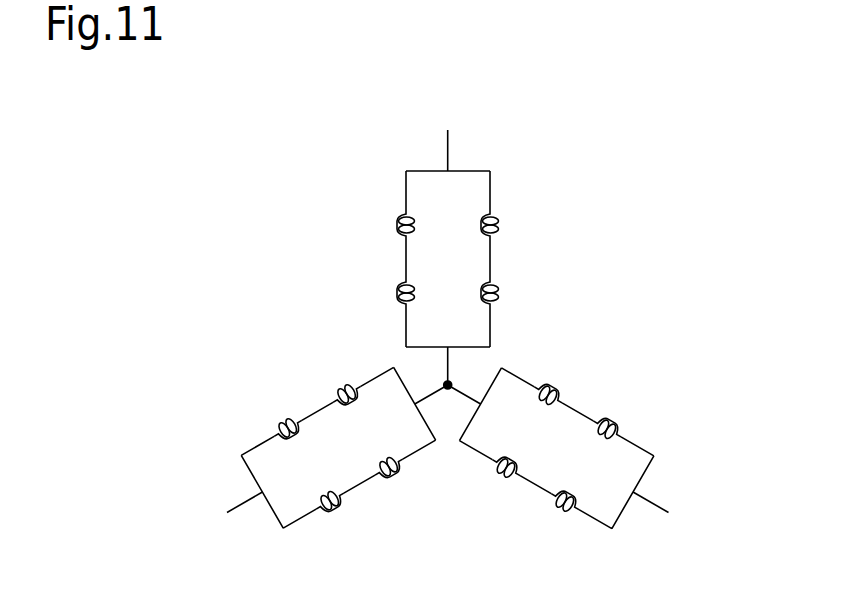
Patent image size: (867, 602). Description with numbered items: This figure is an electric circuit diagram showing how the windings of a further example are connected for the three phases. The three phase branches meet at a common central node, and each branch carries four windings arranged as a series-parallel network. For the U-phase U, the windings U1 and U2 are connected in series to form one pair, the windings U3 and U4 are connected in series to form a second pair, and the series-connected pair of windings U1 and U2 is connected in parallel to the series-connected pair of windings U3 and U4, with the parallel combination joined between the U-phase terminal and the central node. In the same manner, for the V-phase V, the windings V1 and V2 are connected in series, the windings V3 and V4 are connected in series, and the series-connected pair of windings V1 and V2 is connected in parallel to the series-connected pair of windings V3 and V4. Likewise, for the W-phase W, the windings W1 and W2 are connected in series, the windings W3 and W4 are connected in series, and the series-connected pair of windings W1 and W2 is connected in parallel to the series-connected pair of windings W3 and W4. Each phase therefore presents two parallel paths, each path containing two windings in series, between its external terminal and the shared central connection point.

The U-phase U is at (448, 135).
The V-phase V is at (233, 513).
The W-phase W is at (661, 514).
The winding U1 is at (395, 217).
The winding U2 is at (395, 289).
The winding U3 is at (500, 218).
The winding U4 is at (500, 289).
The winding V1 is at (329, 512).
The winding V2 is at (392, 482).
The winding V3 is at (282, 417).
The winding V4 is at (340, 383).
The winding W1 is at (623, 427).
The winding W2 is at (563, 390).
The winding W3 is at (566, 510).
The winding W4 is at (507, 476).